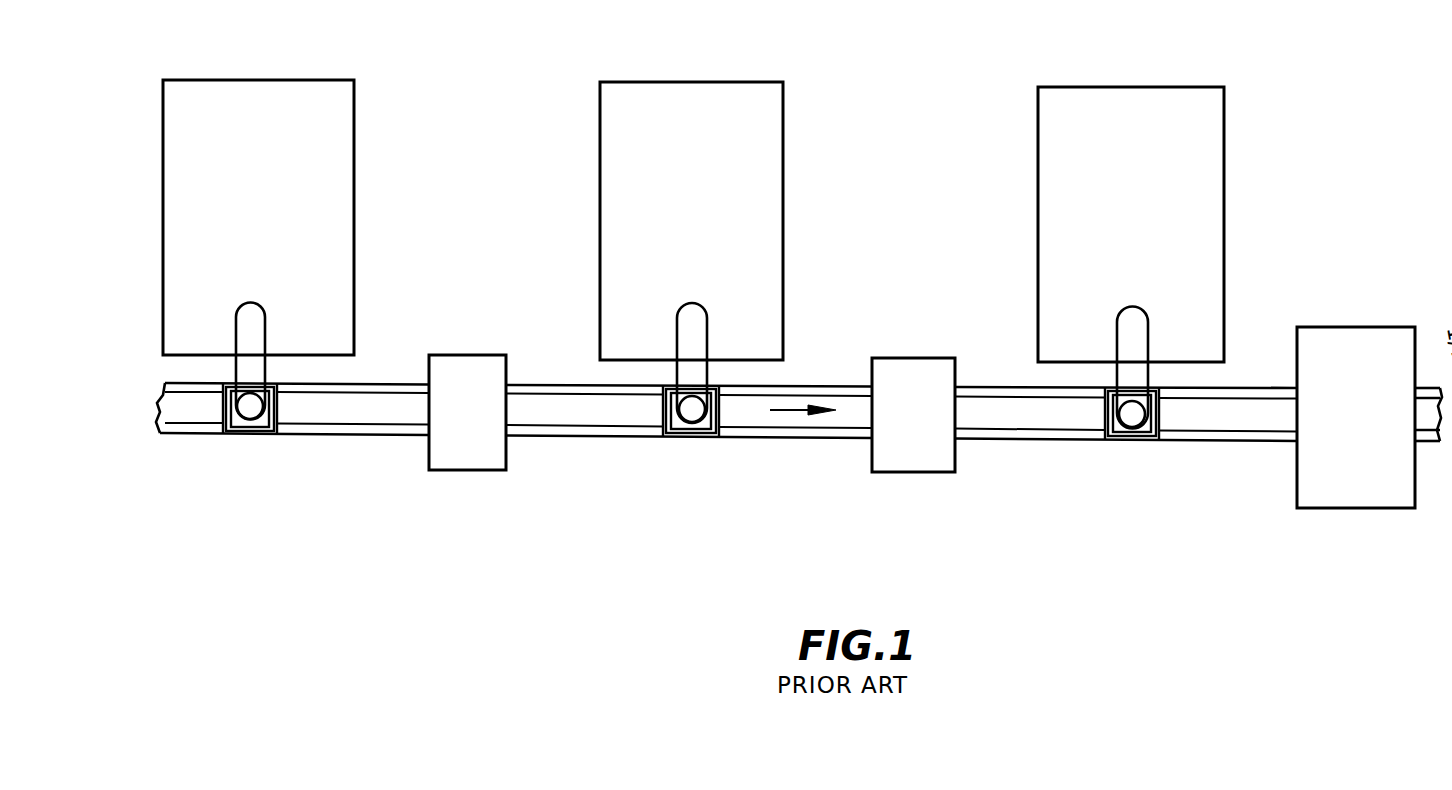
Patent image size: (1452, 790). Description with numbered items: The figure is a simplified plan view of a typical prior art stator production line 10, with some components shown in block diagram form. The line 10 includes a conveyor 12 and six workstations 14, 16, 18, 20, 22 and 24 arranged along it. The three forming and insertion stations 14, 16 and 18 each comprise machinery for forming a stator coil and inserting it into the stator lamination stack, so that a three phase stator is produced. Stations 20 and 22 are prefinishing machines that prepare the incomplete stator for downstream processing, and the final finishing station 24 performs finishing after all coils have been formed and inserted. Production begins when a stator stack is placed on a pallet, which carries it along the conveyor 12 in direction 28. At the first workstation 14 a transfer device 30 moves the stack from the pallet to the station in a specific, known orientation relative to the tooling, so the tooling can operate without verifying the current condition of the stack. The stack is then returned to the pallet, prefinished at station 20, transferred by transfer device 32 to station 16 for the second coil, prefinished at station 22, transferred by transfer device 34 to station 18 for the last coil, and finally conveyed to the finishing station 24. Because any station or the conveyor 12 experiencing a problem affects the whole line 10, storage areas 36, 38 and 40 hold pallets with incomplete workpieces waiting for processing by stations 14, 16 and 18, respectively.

The stator production line 10 is at (488, 522).
The conveyor 12 is at (395, 413).
The first workstation 14 is at (342, 80).
The second workstation 16 is at (770, 82).
The third workstation 18 is at (1160, 87).
The prefinishing station 20 is at (462, 355).
The prefinishing station 22 is at (912, 358).
The final finishing station 24 is at (1360, 327).
The direction 28 is at (796, 414).
The transfer device 30 is at (258, 304).
The transfer device 32 is at (700, 306).
The transfer device 34 is at (1140, 309).
The storage area 36 is at (208, 416).
The storage area 38 is at (606, 415).
The storage area 40 is at (1033, 418).